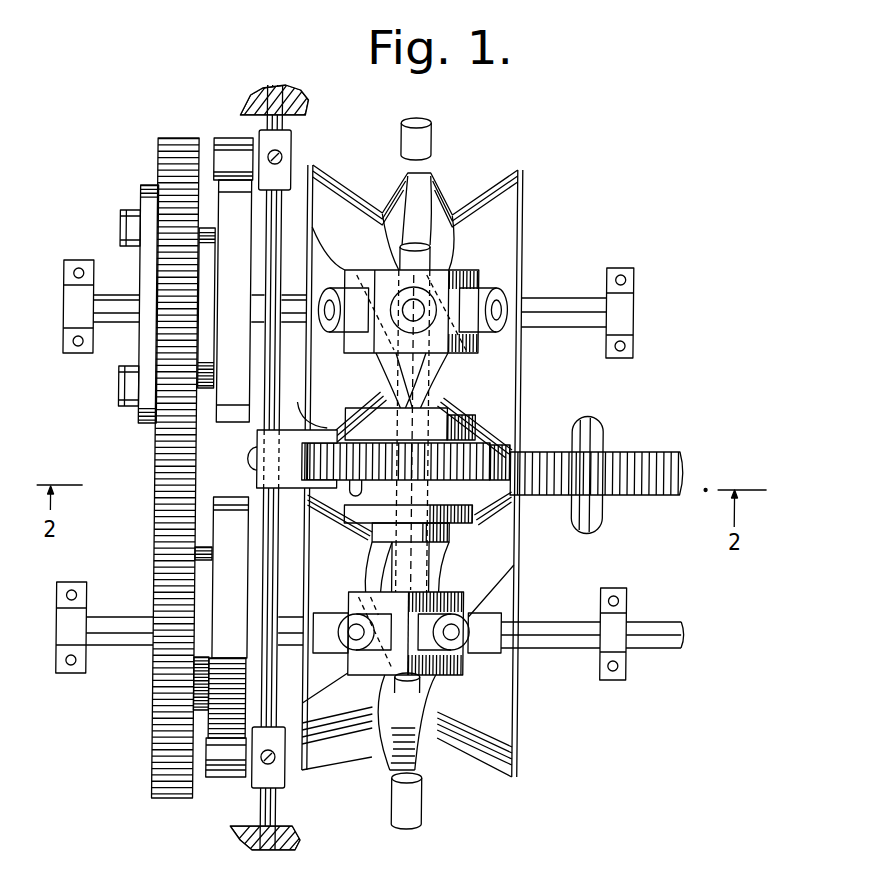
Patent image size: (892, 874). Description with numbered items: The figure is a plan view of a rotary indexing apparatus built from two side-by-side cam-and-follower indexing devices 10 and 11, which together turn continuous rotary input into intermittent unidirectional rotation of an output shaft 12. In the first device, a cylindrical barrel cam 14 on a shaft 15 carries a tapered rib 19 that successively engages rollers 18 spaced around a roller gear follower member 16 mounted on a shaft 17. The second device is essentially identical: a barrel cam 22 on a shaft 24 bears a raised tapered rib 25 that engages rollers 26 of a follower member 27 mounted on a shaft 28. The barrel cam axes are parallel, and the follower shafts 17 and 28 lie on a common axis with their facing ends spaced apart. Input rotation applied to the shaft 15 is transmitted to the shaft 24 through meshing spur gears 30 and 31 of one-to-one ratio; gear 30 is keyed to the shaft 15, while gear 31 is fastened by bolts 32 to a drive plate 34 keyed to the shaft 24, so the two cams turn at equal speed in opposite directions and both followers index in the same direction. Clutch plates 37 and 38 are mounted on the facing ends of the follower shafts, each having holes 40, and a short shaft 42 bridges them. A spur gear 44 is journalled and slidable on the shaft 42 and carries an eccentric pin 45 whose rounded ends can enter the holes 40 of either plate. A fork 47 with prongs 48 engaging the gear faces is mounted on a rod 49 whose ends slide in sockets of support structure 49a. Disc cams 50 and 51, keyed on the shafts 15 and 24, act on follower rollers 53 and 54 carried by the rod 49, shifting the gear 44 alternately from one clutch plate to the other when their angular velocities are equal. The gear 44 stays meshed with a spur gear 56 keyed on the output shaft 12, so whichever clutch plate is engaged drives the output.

The rotary indexing device 10 is at (530, 712).
The rotary indexing device 11 is at (539, 233).
The output shaft 12 is at (605, 431).
The cylindrical barrel cam 14 is at (518, 760).
The shaft 15 is at (571, 622).
The roller gear follower member 16 is at (470, 668).
The shaft 17 is at (412, 570).
The rollers 18 is at (355, 608).
The tapered rib 19 is at (382, 744).
The barrel cam 22 is at (488, 195).
The shaft 24 is at (565, 300).
The raised tapered rib 25 is at (392, 196).
The rollers 26 is at (352, 298).
The roller gear follower member 27 is at (480, 350).
The shaft 28 is at (413, 388).
The spur gear 30 is at (172, 711).
The spur gear 31 is at (168, 431).
The bolts 32 is at (124, 226).
The drive plate 34 is at (142, 286).
The clutch plate 37 is at (477, 523).
The clutch plate 38 is at (477, 428).
The holes 40 is at (368, 432).
The short shaft 42 is at (412, 487).
The spur gear 44 is at (510, 434).
The eccentrically disposed pin 45 is at (343, 494).
The fork 47 is at (257, 441).
The prongs 48 is at (305, 403).
The rod 49 is at (276, 232).
The support structure 49a is at (294, 101).
The disc cam 50 is at (223, 636).
The disc cam 51 is at (226, 215).
The follower roller 53 is at (222, 770).
The follower roller 54 is at (226, 140).
The spur gear 56 is at (622, 482).